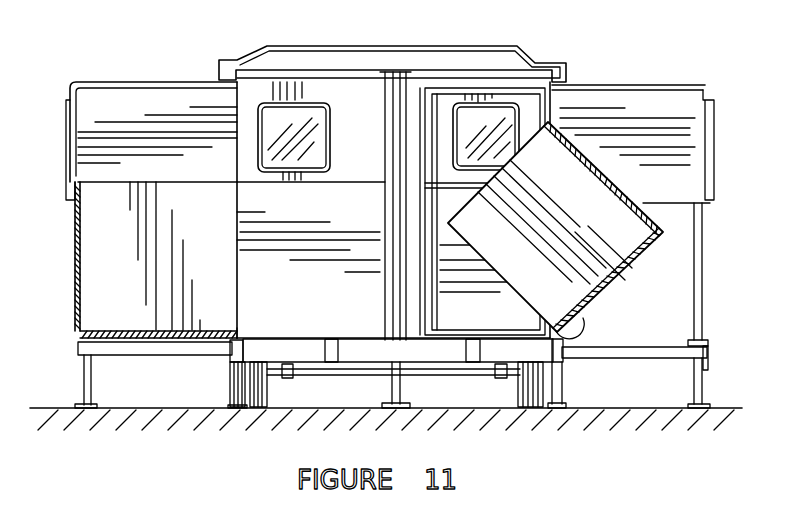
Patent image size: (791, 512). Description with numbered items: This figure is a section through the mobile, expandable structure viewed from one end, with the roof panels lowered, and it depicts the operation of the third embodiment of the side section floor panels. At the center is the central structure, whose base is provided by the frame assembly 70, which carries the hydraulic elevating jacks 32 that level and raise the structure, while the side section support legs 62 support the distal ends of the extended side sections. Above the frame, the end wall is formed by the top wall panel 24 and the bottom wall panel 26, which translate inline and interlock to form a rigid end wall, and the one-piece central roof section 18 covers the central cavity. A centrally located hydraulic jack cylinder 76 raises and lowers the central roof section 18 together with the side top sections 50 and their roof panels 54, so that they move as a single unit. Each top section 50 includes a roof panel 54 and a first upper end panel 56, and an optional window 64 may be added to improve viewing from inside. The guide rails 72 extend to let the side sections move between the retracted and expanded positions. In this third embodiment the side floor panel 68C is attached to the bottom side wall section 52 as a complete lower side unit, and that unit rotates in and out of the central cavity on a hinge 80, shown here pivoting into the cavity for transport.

The central roof section 18 is at (338, 45).
The top wall panel 24 is at (372, 138).
The bottom wall panel 26 is at (353, 313).
The hydraulic elevating jack 32 is at (232, 376).
The top section 50 is at (70, 76).
The bottom side wall section 52 is at (60, 331).
The roof panel 54 is at (137, 82).
The first upper end panel 56 is at (122, 114).
The side section support leg 62 is at (91, 380).
The window 64 is at (715, 143).
The side floor panel 68C is at (575, 193).
The frame assembly 70 is at (420, 350).
The guide rail 72 is at (143, 355).
The hydraulic jack cylinder 76 is at (393, 208).
The hinge 80 is at (237, 332).